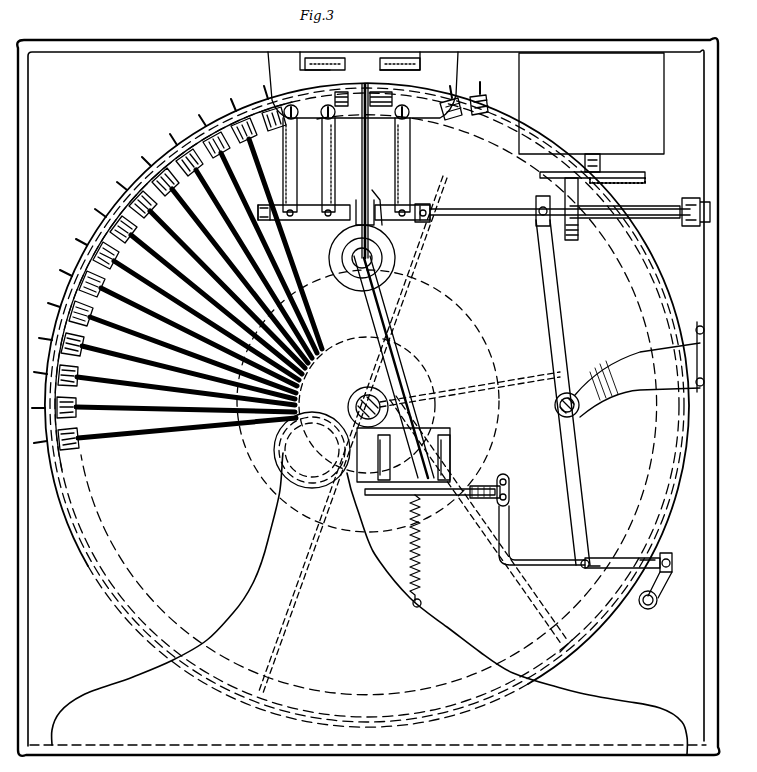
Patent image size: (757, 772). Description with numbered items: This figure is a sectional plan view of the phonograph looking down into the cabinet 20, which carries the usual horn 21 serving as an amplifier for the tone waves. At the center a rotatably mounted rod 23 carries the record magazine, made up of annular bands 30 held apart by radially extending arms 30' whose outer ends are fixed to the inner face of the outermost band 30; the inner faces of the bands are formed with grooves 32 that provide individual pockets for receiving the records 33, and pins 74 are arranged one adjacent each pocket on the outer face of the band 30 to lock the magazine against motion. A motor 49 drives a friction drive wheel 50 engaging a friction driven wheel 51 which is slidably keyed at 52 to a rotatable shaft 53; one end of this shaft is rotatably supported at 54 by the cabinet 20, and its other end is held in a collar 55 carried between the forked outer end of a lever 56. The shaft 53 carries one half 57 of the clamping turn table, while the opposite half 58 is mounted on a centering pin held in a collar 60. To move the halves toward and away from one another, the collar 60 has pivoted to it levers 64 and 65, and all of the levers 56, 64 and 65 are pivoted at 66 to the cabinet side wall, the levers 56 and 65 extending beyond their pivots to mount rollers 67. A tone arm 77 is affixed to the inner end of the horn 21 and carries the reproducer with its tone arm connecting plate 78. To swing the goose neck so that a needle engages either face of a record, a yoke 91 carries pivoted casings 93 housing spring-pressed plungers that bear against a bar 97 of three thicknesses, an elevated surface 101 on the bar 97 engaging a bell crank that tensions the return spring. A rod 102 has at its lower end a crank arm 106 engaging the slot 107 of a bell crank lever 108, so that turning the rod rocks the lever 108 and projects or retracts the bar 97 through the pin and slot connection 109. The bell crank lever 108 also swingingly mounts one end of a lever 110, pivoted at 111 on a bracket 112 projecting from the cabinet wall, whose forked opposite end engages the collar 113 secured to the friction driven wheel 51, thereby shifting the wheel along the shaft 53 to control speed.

The cabinet 20 is at (718, 661).
The horn 21 is at (585, 708).
The rotatably mounted rod 23 is at (348, 405).
The annular bands 30 is at (175, 119).
The radially extending arms 30' is at (223, 407).
The grooves 32 is at (262, 98).
The records 33 is at (372, 146).
The motor 49 is at (591, 103).
The friction drive wheel 50 is at (646, 176).
The friction driven wheel 51 is at (574, 234).
The key 52 is at (640, 207).
The rotatable shaft 53 is at (470, 216).
The rotatable support 54 is at (706, 200).
The collar 55 is at (424, 204).
The lever 56 is at (410, 164).
The half of clamping turn table 57 is at (376, 198).
The opposite half of clamping turn table 58 is at (358, 200).
The collar 60 is at (312, 220).
The lever 64 is at (284, 157).
The lever 65 is at (334, 156).
The pivot 66 is at (326, 105).
The rollers 67 is at (385, 58).
The pins 74 is at (122, 192).
The tone arm 77 is at (400, 360).
The tone arm connecting plate 78 is at (392, 253).
The yoke 91 is at (446, 432).
The casings 93 is at (452, 446).
The bar 97 is at (488, 486).
The elevated surface 101 is at (424, 505).
The rod 102 is at (647, 609).
The crank arm 106 is at (668, 582).
The slot 107 is at (667, 553).
The bell crank lever 108 is at (530, 564).
The pin and slot connection 109 is at (510, 488).
The lever 110 is at (580, 470).
The pivot 111 is at (556, 406).
The bracket 112 is at (648, 384).
The collar 113 is at (530, 218).